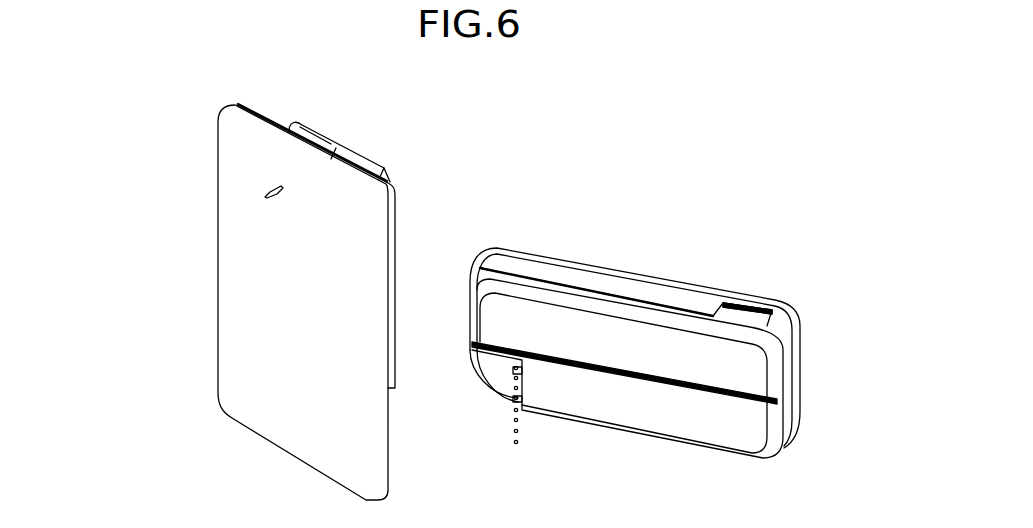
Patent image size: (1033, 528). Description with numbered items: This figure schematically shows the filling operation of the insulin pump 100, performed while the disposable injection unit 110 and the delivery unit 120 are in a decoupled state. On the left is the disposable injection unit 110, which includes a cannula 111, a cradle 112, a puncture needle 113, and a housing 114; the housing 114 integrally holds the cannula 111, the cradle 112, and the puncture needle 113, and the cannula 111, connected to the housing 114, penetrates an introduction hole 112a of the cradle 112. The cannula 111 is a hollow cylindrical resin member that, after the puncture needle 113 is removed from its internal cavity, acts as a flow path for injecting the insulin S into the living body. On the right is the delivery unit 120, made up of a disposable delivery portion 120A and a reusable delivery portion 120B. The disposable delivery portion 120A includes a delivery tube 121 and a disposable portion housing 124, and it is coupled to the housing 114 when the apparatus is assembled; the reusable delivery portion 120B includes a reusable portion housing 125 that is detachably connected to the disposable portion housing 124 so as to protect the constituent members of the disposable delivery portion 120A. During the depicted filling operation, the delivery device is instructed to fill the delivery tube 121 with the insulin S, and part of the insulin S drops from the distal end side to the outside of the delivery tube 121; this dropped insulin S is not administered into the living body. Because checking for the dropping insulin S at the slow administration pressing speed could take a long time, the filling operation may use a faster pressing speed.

The insulin pump 100 is at (101, 103).
The disposable injection unit 110 is at (295, 303).
The cannula 111 is at (273, 188).
The cradle 112 is at (230, 308).
The introduction hole 112a is at (360, 158).
The puncture needle 113 is at (330, 152).
The housing 114 is at (317, 143).
The delivery unit 120 is at (619, 346).
The disposable delivery portion 120A is at (624, 447).
The reusable delivery portion 120B is at (656, 257).
The delivery tube 121 is at (513, 370).
The disposable portion housing 124 is at (708, 432).
The reusable portion housing 125 is at (708, 298).
The insulin S is at (515, 445).